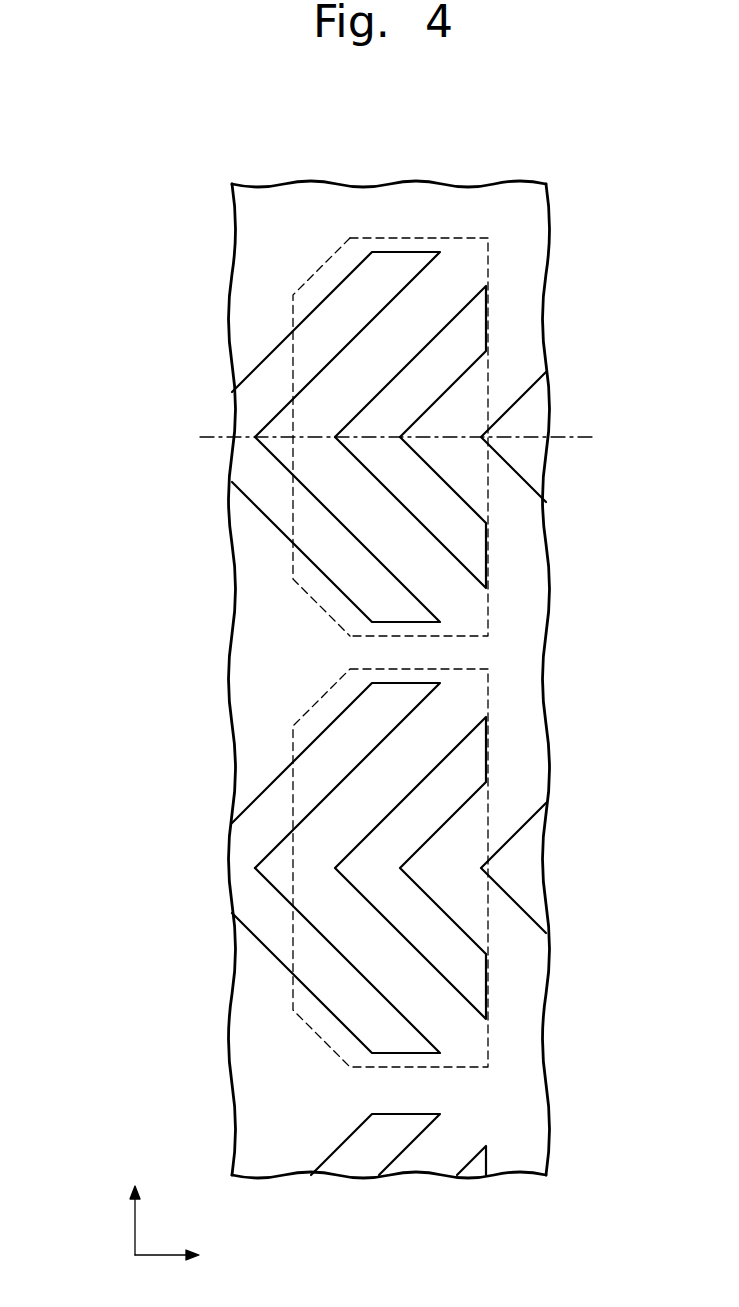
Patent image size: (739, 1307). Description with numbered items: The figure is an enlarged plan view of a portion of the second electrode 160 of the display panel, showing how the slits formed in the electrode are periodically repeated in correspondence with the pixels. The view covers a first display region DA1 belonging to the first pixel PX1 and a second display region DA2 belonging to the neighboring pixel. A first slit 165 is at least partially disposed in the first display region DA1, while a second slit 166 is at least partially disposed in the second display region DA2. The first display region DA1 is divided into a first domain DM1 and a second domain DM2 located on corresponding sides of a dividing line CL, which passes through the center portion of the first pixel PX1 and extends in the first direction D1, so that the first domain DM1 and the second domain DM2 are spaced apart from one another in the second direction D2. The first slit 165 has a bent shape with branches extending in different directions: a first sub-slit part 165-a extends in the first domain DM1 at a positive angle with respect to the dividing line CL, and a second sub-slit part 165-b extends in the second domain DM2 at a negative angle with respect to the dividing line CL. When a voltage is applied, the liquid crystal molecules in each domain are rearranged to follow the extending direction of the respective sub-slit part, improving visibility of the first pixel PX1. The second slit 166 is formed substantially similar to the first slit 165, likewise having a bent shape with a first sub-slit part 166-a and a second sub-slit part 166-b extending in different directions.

The second electrode 160 is at (400, 190).
The first pixel PX1 is at (493, 247).
The first domain DM1 is at (468, 277).
The second domain DM2 is at (468, 603).
The first display region DA1 is at (293, 312).
The second display region DA2 is at (293, 728).
The first slit 165 is at (126, 390).
The first sub-slit part 165-a is at (255, 399).
The second sub-slit part 165-b is at (255, 474).
The second slit 166 is at (126, 755).
The first sub-slit part 166-a is at (323, 762).
The second sub-slit part 166-b is at (323, 968).
The dividing line CL is at (409, 436).
The first direction D1 is at (180, 1255).
The second direction D2 is at (133, 1208).